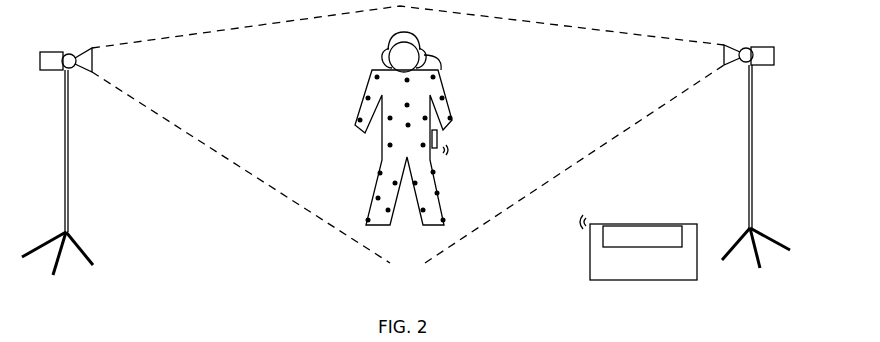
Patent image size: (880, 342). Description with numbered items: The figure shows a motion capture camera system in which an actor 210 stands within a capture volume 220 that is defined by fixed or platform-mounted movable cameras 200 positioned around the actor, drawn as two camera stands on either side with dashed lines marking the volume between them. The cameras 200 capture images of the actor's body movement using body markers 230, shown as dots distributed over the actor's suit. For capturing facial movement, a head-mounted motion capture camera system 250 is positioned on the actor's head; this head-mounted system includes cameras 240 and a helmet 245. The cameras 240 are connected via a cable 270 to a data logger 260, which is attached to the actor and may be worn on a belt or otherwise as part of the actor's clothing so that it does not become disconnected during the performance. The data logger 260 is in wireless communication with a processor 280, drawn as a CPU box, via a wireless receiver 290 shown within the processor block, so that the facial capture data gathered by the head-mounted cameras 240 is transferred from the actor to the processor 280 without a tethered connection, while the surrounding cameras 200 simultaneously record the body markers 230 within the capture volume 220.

The cameras 200 is at (67, 174).
The actor 210 is at (437, 94).
The capture volume 220 is at (473, 218).
The body markers 230 is at (445, 219).
The cameras 240 is at (388, 62).
The helmet 245 is at (392, 38).
The head-mounted motion capture camera system 250 is at (420, 33).
The data logger 260 is at (437, 138).
The cable 270 is at (441, 70).
The processor 280 is at (603, 255).
The wireless receiver 290 is at (640, 226).